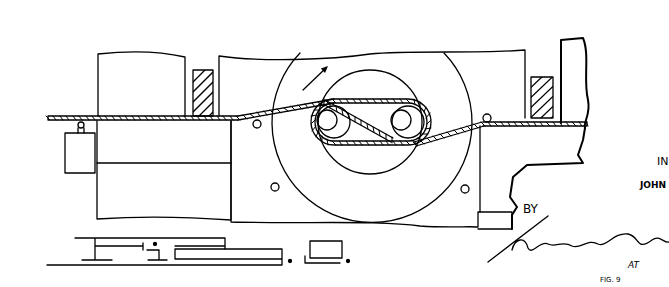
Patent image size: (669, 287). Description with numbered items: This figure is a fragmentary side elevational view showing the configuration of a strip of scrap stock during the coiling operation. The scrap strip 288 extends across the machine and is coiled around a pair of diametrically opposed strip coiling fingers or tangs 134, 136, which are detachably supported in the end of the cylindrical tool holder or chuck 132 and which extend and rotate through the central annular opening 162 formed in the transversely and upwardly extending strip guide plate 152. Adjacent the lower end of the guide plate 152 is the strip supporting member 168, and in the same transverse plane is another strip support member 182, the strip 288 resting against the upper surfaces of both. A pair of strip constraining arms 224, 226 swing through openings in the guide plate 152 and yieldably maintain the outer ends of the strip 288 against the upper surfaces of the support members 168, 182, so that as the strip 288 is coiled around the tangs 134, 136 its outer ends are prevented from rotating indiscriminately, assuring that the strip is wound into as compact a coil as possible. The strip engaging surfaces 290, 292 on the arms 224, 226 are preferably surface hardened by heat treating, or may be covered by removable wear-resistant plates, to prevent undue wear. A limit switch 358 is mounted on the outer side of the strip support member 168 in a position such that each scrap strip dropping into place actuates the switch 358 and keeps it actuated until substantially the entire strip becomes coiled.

The cylindrical tool holder or chuck 132 is at (406, 73).
The strip coiling finger or tang 134 is at (356, 132).
The strip coiling finger or tang 136 is at (386, 124).
The strip guide plate 152 is at (590, 58).
The central annular opening 162 is at (287, 70).
The strip supporting member 168 is at (186, 166).
The strip support member 182 is at (588, 142).
The strip constraining arm 224 is at (544, 73).
The strip constraining arm 226 is at (204, 68).
The scrap strip 288 is at (126, 114).
The strip engaging surface 290 is at (542, 121).
The strip engaging surface 292 is at (205, 122).
The limit switch 358 is at (75, 174).